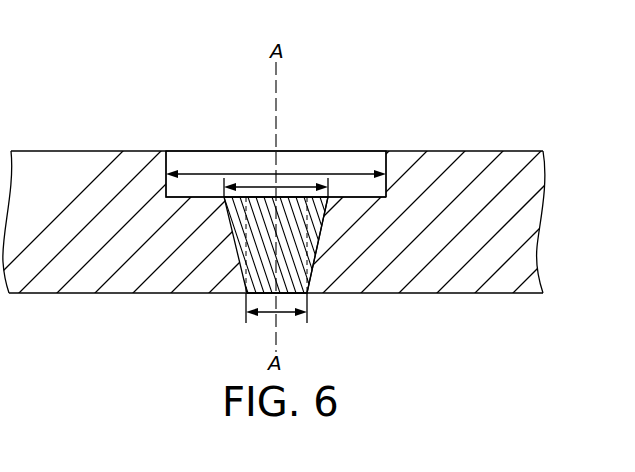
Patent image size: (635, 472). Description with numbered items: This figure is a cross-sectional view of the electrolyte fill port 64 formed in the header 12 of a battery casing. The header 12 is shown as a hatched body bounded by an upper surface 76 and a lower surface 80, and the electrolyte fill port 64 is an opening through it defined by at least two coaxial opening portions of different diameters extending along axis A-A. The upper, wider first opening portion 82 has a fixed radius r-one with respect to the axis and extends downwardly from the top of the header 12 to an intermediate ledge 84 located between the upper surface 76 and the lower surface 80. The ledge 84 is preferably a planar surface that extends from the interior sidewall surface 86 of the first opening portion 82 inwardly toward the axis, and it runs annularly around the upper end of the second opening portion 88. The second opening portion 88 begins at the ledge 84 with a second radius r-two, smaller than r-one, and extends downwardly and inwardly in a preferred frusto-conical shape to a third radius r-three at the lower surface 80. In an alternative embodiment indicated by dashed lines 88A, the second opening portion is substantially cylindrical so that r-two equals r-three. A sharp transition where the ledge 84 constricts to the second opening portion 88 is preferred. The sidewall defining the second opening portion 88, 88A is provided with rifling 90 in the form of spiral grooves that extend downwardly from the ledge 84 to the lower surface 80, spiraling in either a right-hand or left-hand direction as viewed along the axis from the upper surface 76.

The header 12 is at (496, 76).
The upper surface 76 is at (474, 140).
The lower surface 80 is at (78, 295).
The intermediate ledge 84 is at (197, 158).
The electrolyte fill port 64 is at (165, 153).
The first opening portion 82 is at (327, 156).
The interior sidewall surface 86 is at (378, 158).
The second opening portion 88 is at (191, 311).
The substantially cylindrical second opening portion 88A is at (322, 246).
The rifling 90 is at (306, 290).